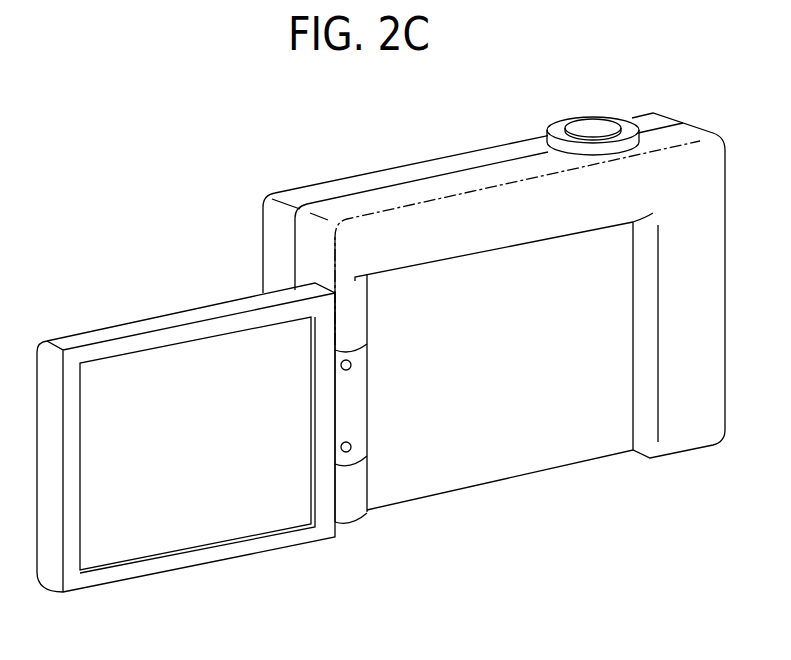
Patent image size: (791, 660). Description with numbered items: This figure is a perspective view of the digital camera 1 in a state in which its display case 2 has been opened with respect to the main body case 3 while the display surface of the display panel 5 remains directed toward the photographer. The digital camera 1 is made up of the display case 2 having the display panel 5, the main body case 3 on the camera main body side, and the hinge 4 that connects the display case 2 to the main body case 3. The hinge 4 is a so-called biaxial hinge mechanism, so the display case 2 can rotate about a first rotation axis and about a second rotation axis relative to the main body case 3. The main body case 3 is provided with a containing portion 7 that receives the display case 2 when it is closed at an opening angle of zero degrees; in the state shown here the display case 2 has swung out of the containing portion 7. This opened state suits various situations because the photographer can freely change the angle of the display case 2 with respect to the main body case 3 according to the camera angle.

The digital camera 1 is at (620, 107).
The display case 2 is at (176, 540).
The main body case 3 is at (690, 435).
The hinge 4 is at (358, 387).
The display panel 5 is at (265, 514).
The containing portion 7 is at (505, 462).